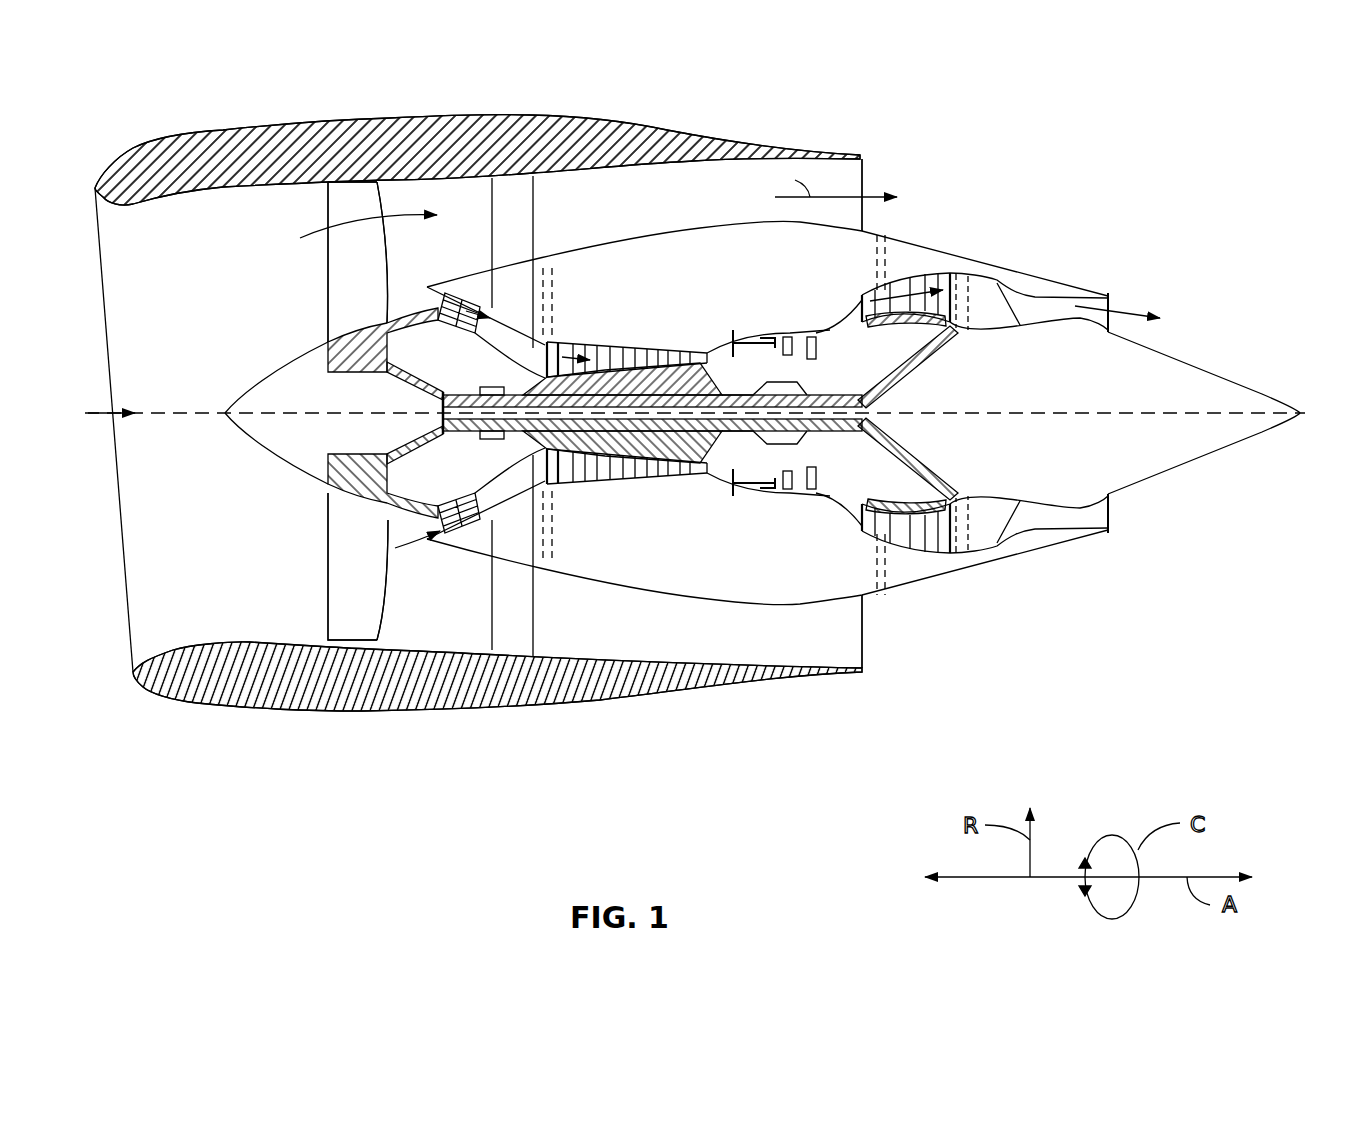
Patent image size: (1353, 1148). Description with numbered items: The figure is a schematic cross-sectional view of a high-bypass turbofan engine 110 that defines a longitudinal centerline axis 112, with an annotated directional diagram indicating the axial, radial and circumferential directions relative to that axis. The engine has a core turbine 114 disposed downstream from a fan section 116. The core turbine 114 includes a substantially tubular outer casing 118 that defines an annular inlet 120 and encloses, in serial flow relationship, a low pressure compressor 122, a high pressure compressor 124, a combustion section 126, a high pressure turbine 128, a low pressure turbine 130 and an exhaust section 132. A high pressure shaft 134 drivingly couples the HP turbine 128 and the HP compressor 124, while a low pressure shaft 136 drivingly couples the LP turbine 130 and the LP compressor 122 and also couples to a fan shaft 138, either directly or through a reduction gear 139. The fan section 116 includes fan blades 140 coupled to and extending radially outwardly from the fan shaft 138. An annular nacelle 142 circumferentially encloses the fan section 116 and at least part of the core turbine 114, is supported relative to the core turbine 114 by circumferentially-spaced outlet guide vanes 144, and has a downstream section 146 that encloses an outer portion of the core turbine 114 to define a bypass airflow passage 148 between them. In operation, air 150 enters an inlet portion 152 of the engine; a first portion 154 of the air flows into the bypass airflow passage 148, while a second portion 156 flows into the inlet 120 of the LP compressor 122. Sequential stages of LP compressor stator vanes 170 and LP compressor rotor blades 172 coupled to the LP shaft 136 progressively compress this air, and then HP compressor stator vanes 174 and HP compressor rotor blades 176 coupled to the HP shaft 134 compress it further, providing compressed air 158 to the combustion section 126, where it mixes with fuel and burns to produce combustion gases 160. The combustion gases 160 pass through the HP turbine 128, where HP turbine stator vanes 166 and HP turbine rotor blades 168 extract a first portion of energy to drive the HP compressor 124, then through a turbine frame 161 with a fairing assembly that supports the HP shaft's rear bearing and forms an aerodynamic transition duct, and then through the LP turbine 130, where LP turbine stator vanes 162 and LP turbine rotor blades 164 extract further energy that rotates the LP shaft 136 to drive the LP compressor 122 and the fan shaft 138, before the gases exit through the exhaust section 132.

The turbofan engine 110 is at (1020, 122).
The centerline axis 112 is at (1053, 413).
The core turbine 114 is at (668, 300).
The fan section 116 is at (366, 98).
The outer casing 118 is at (697, 592).
The annular inlet 120 is at (425, 540).
The low pressure compressor 122 is at (490, 503).
The high pressure compressor 124 is at (565, 490).
The combustion section 126 is at (752, 497).
The high pressure turbine 128 is at (845, 493).
The low pressure turbine 130 is at (953, 562).
The exhaust section 132 is at (1113, 300).
The high pressure shaft 134 is at (872, 352).
The low pressure shaft 136 is at (497, 388).
The fan shaft 138 is at (385, 376).
The reduction gear 139 is at (505, 500).
The fan blades 140 is at (327, 590).
The nacelle 142 is at (380, 713).
The outlet guide vanes 144 is at (553, 197).
The downstream section 146 is at (764, 128).
The bypass airflow passage 148 is at (700, 220).
The air 150 is at (122, 411).
The inlet portion 152 is at (123, 640).
The first portion of air 154 is at (571, 202).
The second portion of air 156 is at (412, 298).
The compressed air 158 is at (745, 378).
The combustion gases 160 is at (838, 325).
The turbine frame 161 is at (867, 330).
The LP turbine stator vanes 162 is at (866, 292).
The LP turbine rotor blades 164 is at (870, 260).
The HP turbine stator vanes 166 is at (848, 564).
The HP turbine rotor blades 168 is at (822, 493).
The LP compressor stator vanes 170 is at (455, 535).
The LP compressor rotor blades 172 is at (490, 530).
The HP compressor stator vanes 174 is at (662, 483).
The HP compressor rotor blades 176 is at (685, 490).